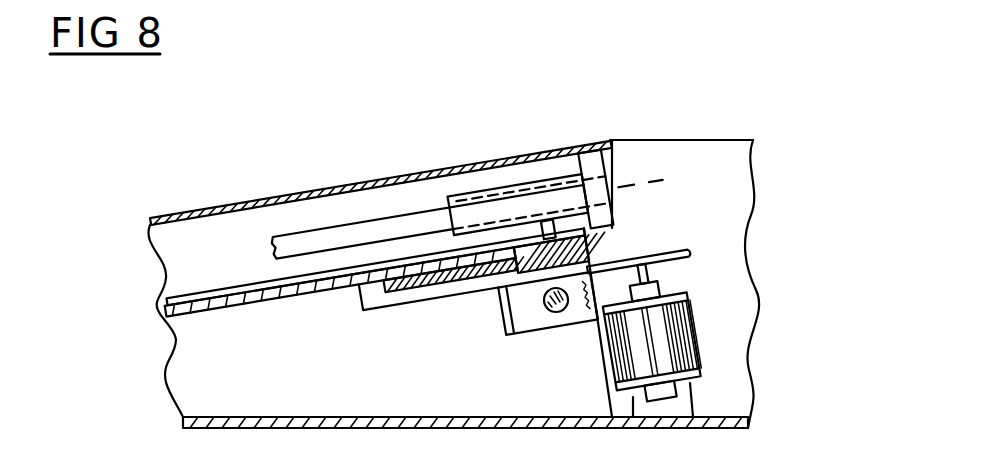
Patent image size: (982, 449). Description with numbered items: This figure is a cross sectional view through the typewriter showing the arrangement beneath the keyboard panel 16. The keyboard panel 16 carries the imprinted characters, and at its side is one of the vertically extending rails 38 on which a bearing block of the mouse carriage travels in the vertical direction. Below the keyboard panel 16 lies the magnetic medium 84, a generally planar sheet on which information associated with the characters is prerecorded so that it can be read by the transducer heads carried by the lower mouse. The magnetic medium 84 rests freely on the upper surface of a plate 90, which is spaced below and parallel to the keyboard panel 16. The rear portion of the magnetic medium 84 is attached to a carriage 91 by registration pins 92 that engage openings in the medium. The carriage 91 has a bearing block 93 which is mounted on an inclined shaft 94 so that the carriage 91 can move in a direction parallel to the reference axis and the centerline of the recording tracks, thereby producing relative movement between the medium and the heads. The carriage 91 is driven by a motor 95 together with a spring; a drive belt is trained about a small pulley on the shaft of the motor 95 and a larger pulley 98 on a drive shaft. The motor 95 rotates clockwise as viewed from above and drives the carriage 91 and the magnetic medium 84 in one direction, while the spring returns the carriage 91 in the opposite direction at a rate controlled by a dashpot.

The keyboard panel 16 is at (397, 173).
The vertically extending rail 38 is at (300, 230).
The registration pin 92 is at (542, 226).
The magnetic medium 84 is at (168, 298).
The plate 90 is at (197, 316).
The carriage 91 is at (417, 296).
The bearing block 93 is at (528, 328).
The inclined shaft 94 is at (568, 302).
The larger pulley 98 is at (661, 253).
The motor 95 is at (700, 330).